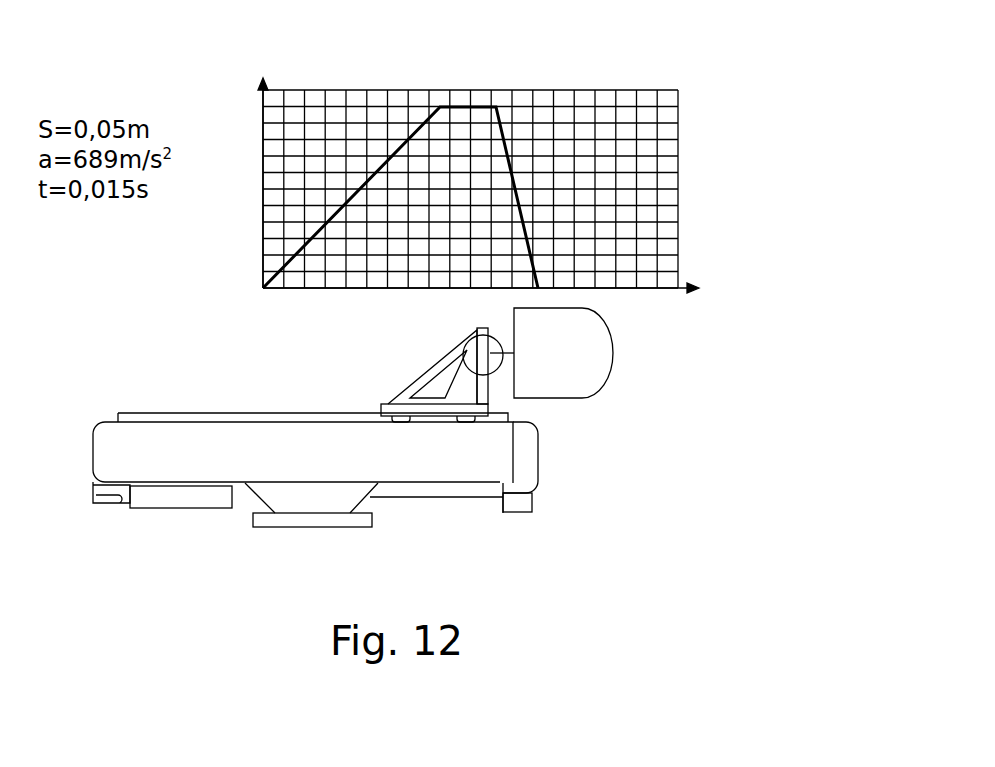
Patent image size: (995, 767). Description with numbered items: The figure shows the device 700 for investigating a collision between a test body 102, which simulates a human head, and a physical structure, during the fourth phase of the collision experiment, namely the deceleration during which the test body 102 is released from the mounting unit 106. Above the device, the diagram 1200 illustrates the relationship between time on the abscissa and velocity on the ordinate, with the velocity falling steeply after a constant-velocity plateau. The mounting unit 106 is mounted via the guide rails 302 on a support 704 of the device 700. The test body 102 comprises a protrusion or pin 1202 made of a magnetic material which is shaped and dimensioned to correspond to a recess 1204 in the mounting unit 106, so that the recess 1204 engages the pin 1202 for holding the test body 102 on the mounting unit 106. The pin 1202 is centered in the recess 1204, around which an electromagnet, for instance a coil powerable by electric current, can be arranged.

The diagram 1200 is at (576, 80).
The device 700 is at (136, 390).
The support 704 is at (193, 443).
The guide rails 302 is at (250, 413).
The mounting unit 106 is at (405, 400).
The recess 1204 is at (466, 346).
The pin 1202 is at (508, 350).
The test body 102 is at (597, 360).